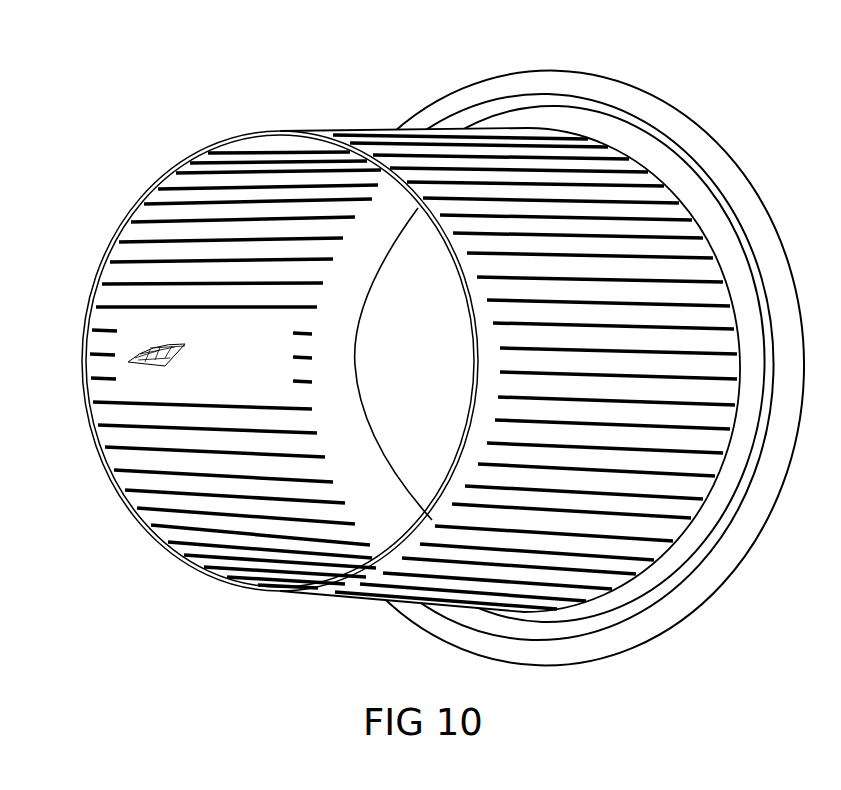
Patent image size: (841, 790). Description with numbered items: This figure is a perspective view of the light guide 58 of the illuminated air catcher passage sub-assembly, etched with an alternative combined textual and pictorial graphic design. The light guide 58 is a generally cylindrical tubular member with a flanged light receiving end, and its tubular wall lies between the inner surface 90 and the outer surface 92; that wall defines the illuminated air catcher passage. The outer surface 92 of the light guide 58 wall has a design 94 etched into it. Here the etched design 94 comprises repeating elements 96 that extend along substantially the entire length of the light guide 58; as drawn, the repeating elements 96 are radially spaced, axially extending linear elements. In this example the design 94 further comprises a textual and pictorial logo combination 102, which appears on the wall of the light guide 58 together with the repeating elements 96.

The light guide 58 is at (737, 124).
The inner surface 90 is at (346, 403).
The outer surface 92 is at (306, 594).
The design 94 is at (417, 133).
The repeating elements 96 is at (457, 583).
The textual and pictorial logo combination 102 is at (147, 365).